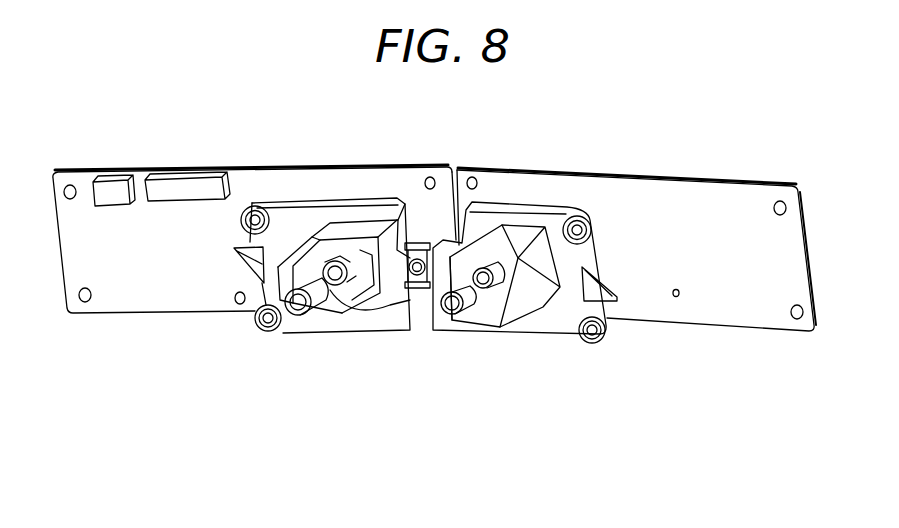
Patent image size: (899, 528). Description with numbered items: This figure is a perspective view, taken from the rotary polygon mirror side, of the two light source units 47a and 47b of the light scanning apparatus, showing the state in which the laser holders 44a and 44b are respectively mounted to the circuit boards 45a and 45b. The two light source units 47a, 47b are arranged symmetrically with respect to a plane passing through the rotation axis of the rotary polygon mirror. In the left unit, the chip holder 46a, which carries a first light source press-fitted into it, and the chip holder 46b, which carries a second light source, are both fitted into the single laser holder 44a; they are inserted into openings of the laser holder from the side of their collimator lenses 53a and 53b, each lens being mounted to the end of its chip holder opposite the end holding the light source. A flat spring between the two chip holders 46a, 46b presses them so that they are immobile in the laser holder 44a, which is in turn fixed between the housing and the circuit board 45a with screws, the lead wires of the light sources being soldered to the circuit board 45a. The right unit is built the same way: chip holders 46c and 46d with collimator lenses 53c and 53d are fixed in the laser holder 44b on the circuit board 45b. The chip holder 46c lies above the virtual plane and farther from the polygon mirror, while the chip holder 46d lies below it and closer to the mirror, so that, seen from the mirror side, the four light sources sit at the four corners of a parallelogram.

The laser holder 44a is at (263, 292).
The laser holder 44b is at (553, 335).
The circuit board 45a is at (80, 177).
The circuit board 45b is at (605, 192).
The chip holder 46a is at (328, 317).
The chip holder 46b is at (413, 298).
The chip holder 46c is at (497, 312).
The chip holder 46d is at (470, 325).
The light source unit 47a is at (331, 294).
The light source unit 47b is at (525, 298).
The collimator lens 53a is at (288, 262).
The collimator lens 53b is at (337, 253).
The collimator lens 53c is at (482, 262).
The collimator lens 53d is at (443, 245).